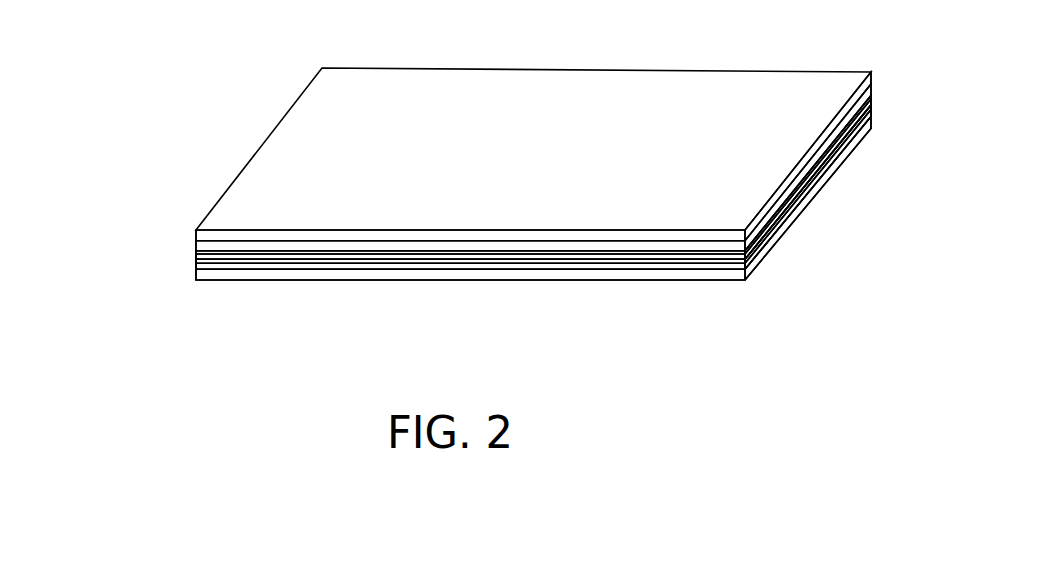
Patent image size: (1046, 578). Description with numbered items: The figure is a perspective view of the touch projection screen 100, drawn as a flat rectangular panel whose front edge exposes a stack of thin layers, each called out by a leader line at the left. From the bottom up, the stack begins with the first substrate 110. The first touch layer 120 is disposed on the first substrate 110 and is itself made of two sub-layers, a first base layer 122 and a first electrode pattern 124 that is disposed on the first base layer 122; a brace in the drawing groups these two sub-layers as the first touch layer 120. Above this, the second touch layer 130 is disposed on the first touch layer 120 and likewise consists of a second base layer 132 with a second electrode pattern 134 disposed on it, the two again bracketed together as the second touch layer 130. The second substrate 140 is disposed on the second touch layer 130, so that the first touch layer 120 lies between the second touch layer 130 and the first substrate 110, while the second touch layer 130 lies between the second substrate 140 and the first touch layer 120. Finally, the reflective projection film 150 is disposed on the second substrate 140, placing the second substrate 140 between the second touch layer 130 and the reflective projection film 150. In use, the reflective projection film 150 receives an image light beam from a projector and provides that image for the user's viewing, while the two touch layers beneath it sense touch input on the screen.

The touch projection screen 100 is at (777, 375).
The first substrate 110 is at (196, 275).
The first touch layer 120 is at (100, 270).
The first base layer 122 is at (196, 266).
The first electrode pattern 124 is at (196, 261).
The second touch layer 130 is at (102, 203).
The second base layer 132 is at (196, 257).
The second electrode pattern 134 is at (196, 252).
The second substrate 140 is at (196, 246).
The reflective projection film 150 is at (196, 235).